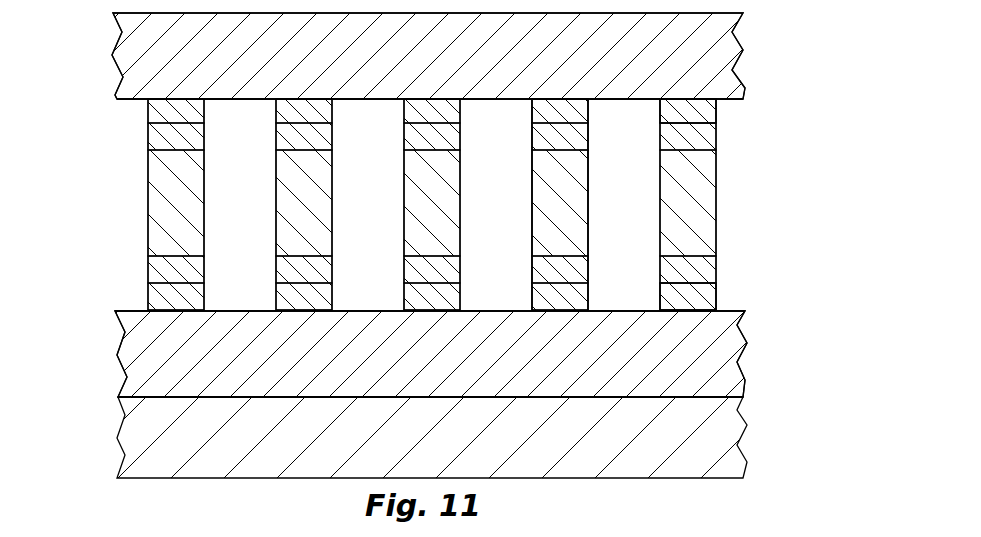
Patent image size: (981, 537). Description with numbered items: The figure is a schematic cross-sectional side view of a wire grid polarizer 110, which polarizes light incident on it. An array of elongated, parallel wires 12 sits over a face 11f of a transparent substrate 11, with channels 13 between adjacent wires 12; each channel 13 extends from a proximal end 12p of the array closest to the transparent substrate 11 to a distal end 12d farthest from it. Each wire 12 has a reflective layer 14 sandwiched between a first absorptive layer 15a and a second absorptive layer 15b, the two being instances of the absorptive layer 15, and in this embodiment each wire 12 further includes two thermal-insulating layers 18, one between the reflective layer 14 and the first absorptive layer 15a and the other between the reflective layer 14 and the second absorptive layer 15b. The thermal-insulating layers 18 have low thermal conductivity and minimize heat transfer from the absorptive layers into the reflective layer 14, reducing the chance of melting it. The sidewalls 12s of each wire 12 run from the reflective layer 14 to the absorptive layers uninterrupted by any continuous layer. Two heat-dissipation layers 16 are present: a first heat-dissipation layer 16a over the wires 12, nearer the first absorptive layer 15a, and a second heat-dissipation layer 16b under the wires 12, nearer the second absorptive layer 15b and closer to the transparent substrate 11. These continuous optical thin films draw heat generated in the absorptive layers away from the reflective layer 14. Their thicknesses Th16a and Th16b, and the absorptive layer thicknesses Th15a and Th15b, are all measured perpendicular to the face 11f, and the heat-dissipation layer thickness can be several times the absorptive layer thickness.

The transparent substrate 11 is at (415, 450).
The face of the transparent substrate 11f is at (131, 395).
The wires 12 is at (84, 241).
The distal end of the array of wires 12d is at (187, 98).
The proximal end of the array of wires 12p is at (188, 312).
The sidewalls of the wires 12s is at (531, 105).
The channels 13 is at (430, 207).
The reflective layer 14 is at (165, 220).
The absorptive layer 15 is at (165, 122).
The first absorptive layer 15a is at (740, 112).
The second absorptive layer 15b is at (740, 294).
The heat-dissipation layer 16 is at (420, 63).
The first heat-dissipation layer 16a is at (428, 56).
The second heat-dissipation layer 16b is at (431, 354).
The thermal-insulating layer 18 is at (165, 148).
The wire grid polarizer 110 is at (61, 421).
The thickness of the first heat-dissipation layer Th16a is at (560, 27).
The thickness of the first absorptive layer Th15a is at (671, 270).
The thickness of the second heat-dissipation layer Th16b is at (562, 325).
The thickness of the second absorptive layer Th15b is at (672, 325).